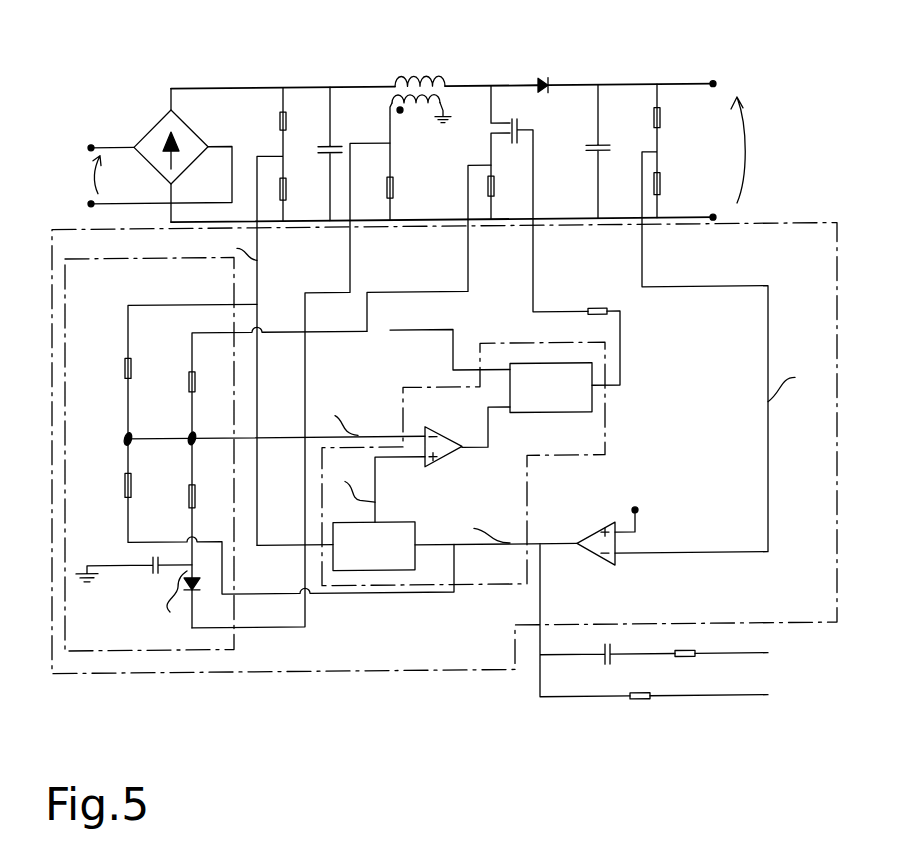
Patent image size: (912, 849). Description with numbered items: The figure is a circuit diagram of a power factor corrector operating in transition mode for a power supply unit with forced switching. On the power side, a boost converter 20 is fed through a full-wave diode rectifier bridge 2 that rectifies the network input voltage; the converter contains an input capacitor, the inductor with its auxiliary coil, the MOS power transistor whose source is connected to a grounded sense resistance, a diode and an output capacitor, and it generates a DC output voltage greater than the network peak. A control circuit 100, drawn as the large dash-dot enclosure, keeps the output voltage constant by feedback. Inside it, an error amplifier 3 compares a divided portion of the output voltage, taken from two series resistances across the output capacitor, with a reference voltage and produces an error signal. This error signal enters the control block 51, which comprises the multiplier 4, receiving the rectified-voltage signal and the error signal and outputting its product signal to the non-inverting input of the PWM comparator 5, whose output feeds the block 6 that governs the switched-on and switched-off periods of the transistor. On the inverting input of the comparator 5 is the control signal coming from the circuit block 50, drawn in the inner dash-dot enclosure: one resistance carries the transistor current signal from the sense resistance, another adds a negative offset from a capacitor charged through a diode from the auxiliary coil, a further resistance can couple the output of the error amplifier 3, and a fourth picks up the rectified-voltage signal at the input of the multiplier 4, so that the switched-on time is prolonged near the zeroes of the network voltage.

The full-wave diode rectifier bridge 2 is at (150, 138).
The boost converter 20 is at (288, 47).
The control circuit 100 is at (813, 225).
The circuit block 50 is at (145, 651).
The control block 51 is at (615, 427).
The PWM comparator 5 is at (453, 432).
The multiplier 4 is at (384, 562).
The control block 6 is at (561, 403).
The error amplifier 3 is at (618, 544).